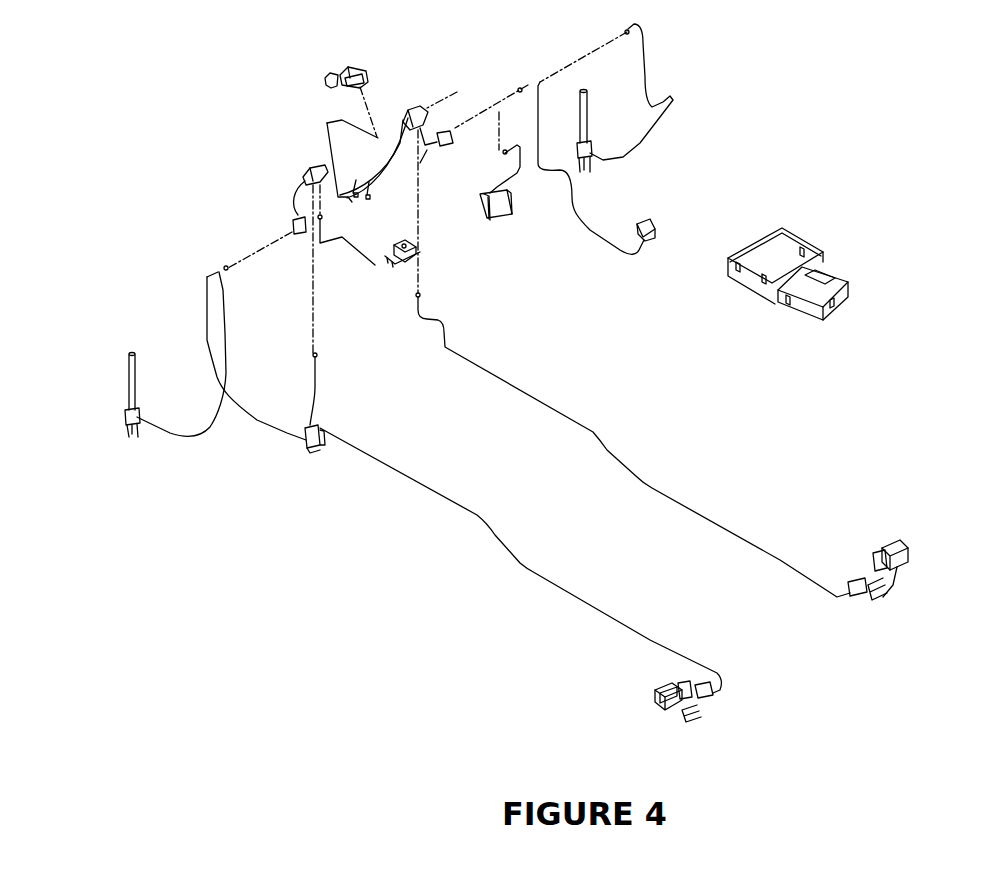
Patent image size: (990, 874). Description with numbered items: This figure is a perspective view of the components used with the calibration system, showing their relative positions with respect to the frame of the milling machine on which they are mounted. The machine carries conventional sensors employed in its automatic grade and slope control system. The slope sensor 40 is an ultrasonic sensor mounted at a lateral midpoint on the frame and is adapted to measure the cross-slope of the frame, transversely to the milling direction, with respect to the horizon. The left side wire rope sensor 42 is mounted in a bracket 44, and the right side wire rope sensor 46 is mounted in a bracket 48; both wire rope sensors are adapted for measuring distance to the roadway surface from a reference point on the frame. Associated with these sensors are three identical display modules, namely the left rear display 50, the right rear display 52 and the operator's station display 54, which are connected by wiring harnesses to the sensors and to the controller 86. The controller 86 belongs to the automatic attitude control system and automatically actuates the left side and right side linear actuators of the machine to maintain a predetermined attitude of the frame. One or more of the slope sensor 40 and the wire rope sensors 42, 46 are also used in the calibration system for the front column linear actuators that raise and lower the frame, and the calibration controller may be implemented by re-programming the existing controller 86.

The slope sensor 40 is at (411, 238).
The left side wire rope sensor 42 is at (319, 425).
The bracket 44 is at (126, 395).
The right side wire rope sensor 46 is at (650, 220).
The bracket 48 is at (601, 122).
The left rear display 50 is at (652, 705).
The right rear display 52 is at (896, 540).
The operator's station display 54 is at (371, 68).
The controller 86 is at (498, 208).